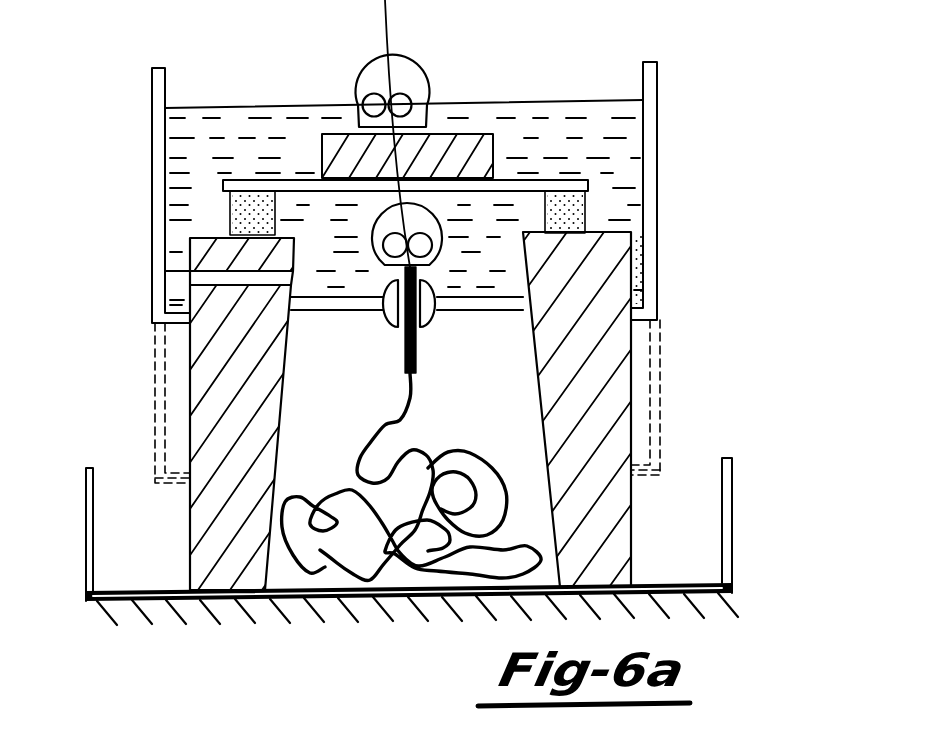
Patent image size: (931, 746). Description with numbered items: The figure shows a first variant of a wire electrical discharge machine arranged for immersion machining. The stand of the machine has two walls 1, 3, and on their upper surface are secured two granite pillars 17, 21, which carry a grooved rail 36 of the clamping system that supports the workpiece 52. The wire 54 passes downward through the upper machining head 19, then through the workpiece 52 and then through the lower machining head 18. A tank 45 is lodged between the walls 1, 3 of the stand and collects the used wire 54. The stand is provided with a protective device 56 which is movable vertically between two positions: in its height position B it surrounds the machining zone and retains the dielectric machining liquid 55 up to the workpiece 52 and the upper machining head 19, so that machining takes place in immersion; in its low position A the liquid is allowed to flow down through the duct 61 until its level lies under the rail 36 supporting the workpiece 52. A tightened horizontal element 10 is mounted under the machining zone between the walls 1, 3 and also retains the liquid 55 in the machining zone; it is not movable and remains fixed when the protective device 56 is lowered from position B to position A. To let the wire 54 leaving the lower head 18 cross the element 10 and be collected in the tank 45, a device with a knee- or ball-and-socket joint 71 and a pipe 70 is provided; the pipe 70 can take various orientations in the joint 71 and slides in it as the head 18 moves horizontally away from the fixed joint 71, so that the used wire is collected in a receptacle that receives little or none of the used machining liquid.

The wall 1 is at (268, 414).
The wall 3 is at (612, 395).
The tightened horizontal element 10 is at (507, 298).
The granite pillar 17 is at (242, 221).
The lower machining head 18 is at (442, 232).
The upper machining head 19 is at (408, 80).
The granite pillar 21 is at (575, 210).
The grooved rail 36 is at (228, 188).
The tank 45 is at (735, 468).
The workpiece 52 is at (485, 152).
The wire 54 is at (388, 46).
The dielectric machining liquid 55 is at (620, 126).
The protective device 56 is at (657, 212).
The duct 61 is at (165, 274).
The pipe 70 is at (416, 357).
The knee- or ball-and-socket joint 71 is at (437, 307).
The low position A is at (148, 483).
The height position B is at (147, 325).